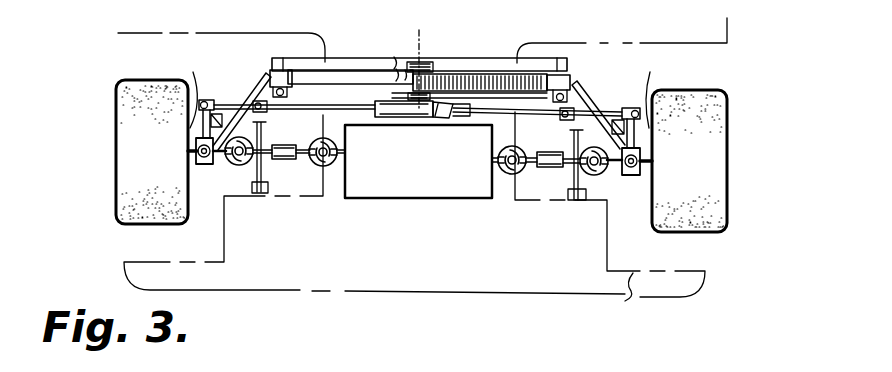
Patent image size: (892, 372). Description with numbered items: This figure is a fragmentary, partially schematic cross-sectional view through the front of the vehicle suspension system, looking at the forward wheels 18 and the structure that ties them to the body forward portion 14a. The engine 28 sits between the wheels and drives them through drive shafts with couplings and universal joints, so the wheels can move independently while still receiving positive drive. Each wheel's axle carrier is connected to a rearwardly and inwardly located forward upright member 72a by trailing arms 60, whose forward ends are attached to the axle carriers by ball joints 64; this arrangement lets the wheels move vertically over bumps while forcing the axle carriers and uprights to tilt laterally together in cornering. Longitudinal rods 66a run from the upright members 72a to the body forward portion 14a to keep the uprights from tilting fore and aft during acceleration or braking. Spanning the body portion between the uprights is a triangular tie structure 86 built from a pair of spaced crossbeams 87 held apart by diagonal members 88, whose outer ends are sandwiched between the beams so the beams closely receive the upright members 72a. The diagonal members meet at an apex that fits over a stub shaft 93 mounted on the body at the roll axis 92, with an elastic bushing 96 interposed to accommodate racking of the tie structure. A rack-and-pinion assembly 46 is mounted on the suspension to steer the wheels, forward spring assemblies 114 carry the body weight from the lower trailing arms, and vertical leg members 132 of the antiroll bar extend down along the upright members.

The body forward portion 14a is at (622, 305).
The forward wheels 18 is at (728, 112).
The engine 28 is at (424, 192).
The rack-and-pinion assembly 46 is at (488, 98).
The upper trailing arm 60 is at (256, 102).
The ball joints 64 is at (210, 165).
The rods 66a is at (268, 170).
The forward upright members 72a is at (277, 72).
The triangular tie structures 86 is at (510, 62).
The crossbeams 87 is at (447, 117).
The diagonal members 88 is at (484, 76).
The roll axis 92 is at (419, 32).
The stub shaft 93 is at (395, 60).
The bushing 96 is at (400, 118).
The forward spring assemblies 114 is at (425, 96).
The vertical leg members 132 is at (539, 152).